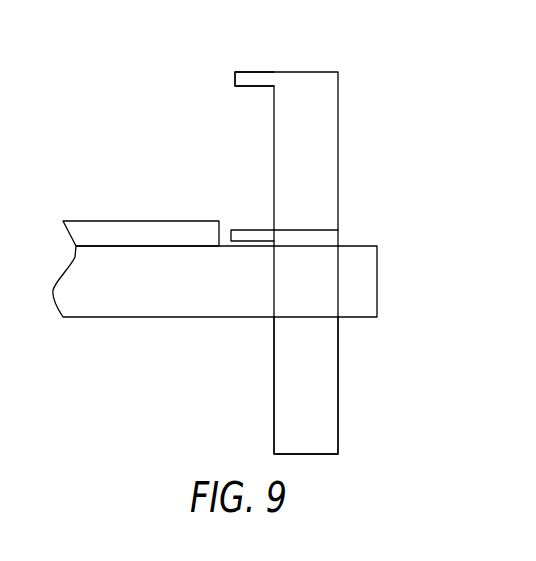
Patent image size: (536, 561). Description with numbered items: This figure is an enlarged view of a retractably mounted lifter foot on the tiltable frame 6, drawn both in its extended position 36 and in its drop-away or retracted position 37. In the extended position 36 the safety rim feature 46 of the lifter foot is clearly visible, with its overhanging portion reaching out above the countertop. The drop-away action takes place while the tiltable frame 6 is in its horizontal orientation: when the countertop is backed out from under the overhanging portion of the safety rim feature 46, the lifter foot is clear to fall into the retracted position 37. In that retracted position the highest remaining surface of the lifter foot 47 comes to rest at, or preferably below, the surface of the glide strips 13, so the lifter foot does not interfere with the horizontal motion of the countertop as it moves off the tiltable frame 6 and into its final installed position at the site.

The tiltable frame 6 is at (153, 326).
The glide strips 13 is at (181, 213).
The extended position 36 is at (346, 121).
The drop-away or retracted position 37 is at (265, 366).
The safety rim feature 46 is at (252, 75).
The highest remaining surface of the lifter foot 47 is at (257, 223).